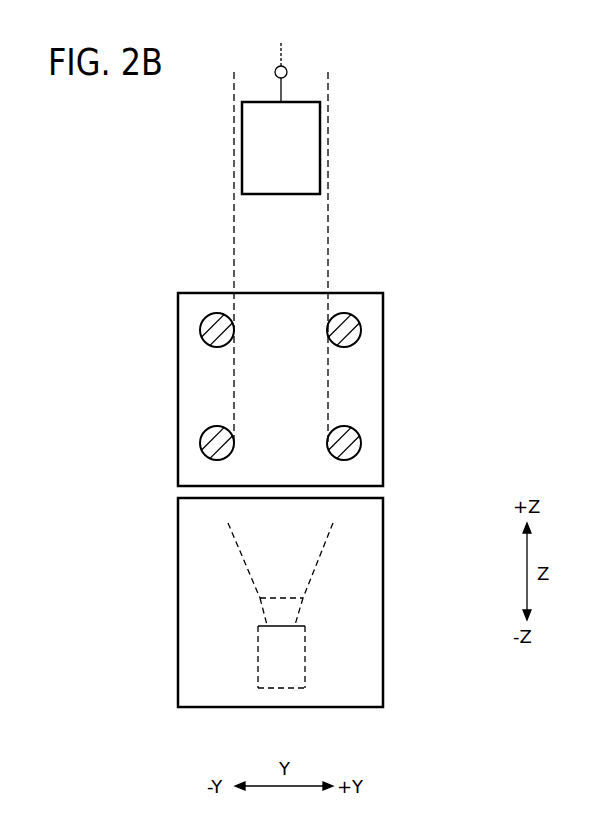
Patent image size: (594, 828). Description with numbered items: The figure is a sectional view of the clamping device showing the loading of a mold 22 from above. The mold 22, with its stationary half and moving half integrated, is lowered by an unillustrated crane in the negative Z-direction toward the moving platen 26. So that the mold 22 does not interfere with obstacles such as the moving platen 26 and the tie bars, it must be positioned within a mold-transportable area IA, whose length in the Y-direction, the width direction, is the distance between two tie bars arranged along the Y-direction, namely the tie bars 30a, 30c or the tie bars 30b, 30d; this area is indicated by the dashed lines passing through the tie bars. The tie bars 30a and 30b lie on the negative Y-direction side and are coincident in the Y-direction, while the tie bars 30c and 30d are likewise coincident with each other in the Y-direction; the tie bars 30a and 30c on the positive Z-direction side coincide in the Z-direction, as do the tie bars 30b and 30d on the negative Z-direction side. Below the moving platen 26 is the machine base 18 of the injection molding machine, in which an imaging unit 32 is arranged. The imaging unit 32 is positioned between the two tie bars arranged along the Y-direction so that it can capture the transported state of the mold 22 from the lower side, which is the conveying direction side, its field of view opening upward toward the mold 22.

The mold-transportable area IA is at (326, 265).
The mold 22 is at (307, 142).
The moving platen 26 is at (363, 387).
The tie bar 30a is at (200, 328).
The tie bar 30b is at (200, 441).
The tie bar 30c is at (361, 328).
The tie bar 30d is at (361, 441).
The machine base 18 is at (363, 582).
The imaging unit 32 is at (280, 672).